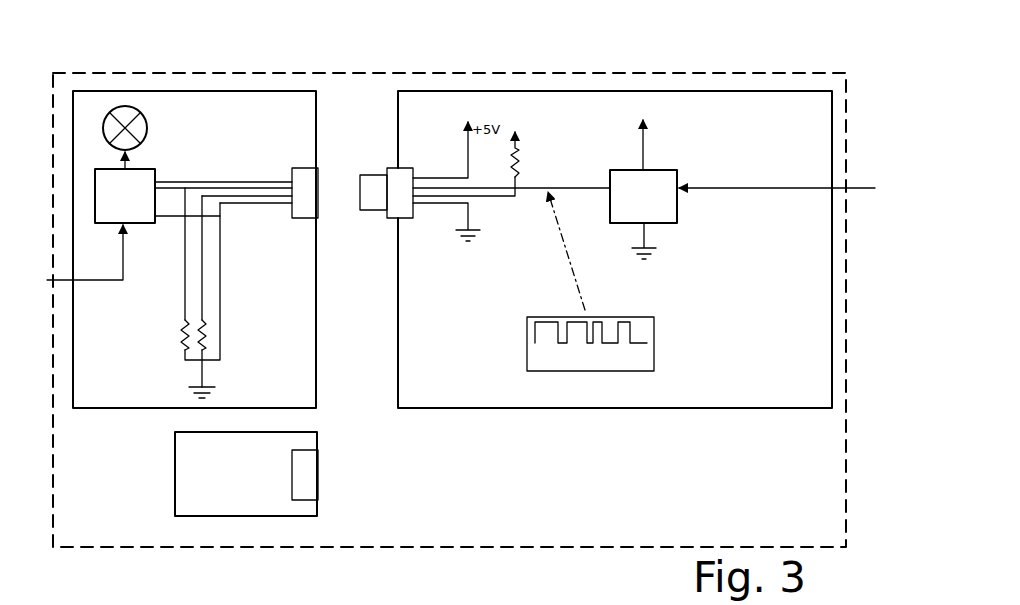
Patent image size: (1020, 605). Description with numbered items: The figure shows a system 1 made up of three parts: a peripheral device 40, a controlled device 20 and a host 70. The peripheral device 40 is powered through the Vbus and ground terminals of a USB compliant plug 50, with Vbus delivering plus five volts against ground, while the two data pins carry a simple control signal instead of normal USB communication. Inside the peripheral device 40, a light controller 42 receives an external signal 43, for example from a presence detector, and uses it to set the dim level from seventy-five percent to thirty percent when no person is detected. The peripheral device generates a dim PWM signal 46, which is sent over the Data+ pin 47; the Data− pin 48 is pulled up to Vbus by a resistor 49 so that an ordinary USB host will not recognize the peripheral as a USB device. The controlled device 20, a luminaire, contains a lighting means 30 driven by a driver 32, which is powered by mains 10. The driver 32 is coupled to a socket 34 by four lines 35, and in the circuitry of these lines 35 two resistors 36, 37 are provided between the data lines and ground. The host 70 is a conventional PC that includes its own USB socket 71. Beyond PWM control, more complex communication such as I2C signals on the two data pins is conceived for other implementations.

The system 1 is at (703, 73).
The mains 10 is at (125, 250).
The controlled device 20 is at (300, 91).
The lighting means 30 is at (128, 108).
The driver 32 is at (150, 169).
The socket 34 is at (310, 220).
The four lines 35 is at (260, 208).
The resistor 36 is at (185, 335).
The resistor 37 is at (207, 335).
The peripheral device 40 is at (490, 91).
The light controller 42 is at (662, 170).
The external signal 43 is at (730, 188).
The PWM signal 46 is at (654, 322).
The Data+ pin 47 is at (562, 188).
The Data− pin 48 is at (483, 197).
The resistor 49 is at (515, 152).
The USB compliant plug 50 is at (401, 220).
The host 70 is at (175, 460).
The USB socket 71 is at (292, 460).